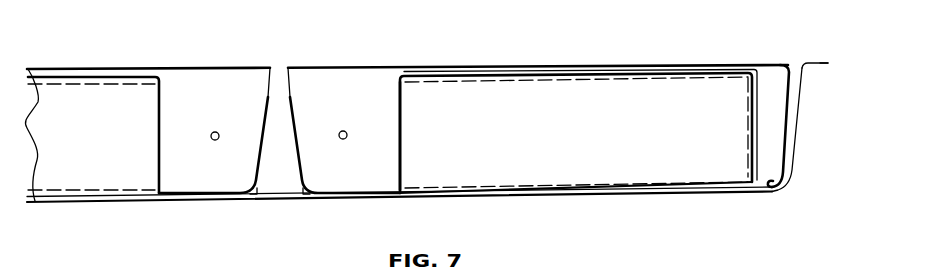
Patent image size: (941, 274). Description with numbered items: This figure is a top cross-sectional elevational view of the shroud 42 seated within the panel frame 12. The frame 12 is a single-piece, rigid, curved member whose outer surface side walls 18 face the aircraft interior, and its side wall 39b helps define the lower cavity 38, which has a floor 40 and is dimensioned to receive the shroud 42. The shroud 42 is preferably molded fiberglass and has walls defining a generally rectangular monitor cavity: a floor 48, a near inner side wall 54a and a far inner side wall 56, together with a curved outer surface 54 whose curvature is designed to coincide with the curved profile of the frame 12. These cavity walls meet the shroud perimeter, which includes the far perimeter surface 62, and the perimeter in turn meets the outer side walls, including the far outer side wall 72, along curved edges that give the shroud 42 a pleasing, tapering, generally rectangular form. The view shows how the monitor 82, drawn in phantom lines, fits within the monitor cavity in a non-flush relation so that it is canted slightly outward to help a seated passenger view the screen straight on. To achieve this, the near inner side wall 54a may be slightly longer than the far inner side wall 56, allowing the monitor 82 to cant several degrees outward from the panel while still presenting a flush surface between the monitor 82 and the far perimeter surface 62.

The frame 12 is at (789, 173).
The outer surface side walls 18 is at (820, 62).
The lower cavity 38 is at (283, 185).
The side wall 39b is at (803, 93).
The floor 40 is at (663, 193).
The shroud 42 is at (835, 78).
The floor 48 is at (558, 77).
The curved outer surface 54 is at (763, 64).
The near inner side wall 54a is at (404, 128).
The far inner side wall 56 is at (747, 130).
The far perimeter surface 62 is at (773, 189).
The far outer side wall 72 is at (787, 116).
The monitor 82 is at (530, 187).